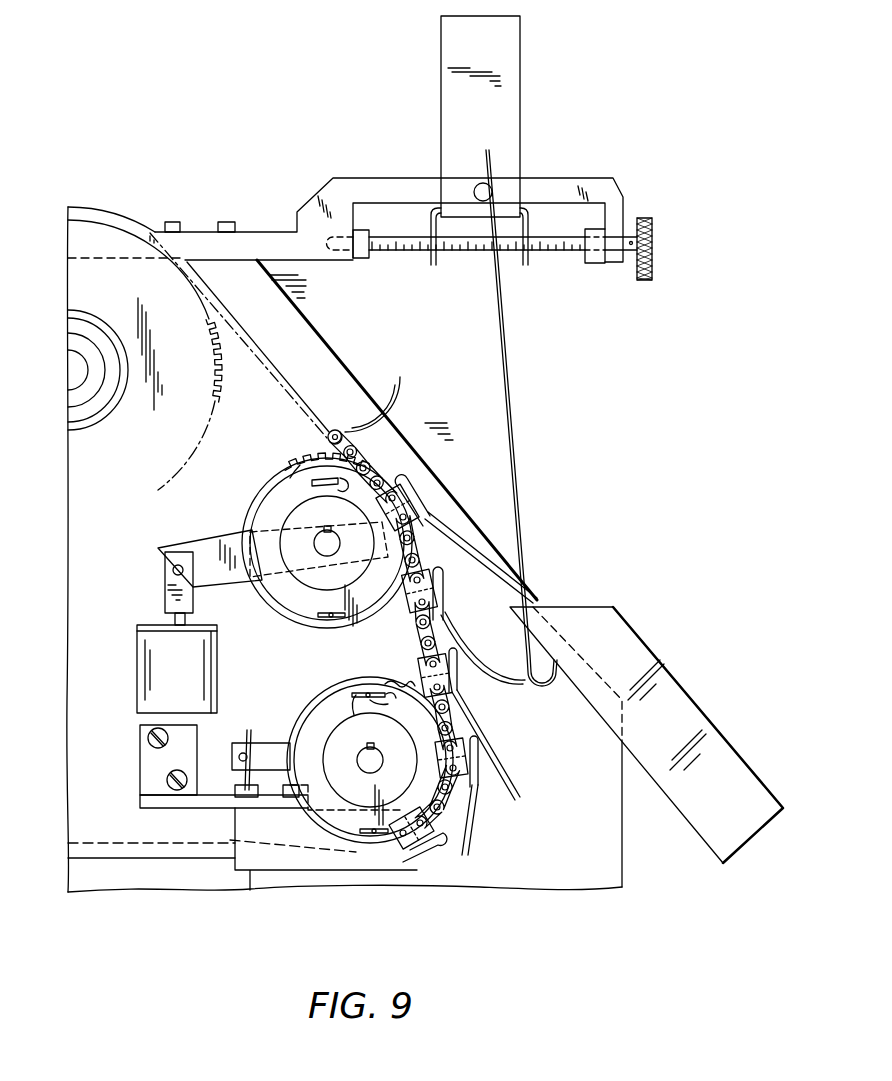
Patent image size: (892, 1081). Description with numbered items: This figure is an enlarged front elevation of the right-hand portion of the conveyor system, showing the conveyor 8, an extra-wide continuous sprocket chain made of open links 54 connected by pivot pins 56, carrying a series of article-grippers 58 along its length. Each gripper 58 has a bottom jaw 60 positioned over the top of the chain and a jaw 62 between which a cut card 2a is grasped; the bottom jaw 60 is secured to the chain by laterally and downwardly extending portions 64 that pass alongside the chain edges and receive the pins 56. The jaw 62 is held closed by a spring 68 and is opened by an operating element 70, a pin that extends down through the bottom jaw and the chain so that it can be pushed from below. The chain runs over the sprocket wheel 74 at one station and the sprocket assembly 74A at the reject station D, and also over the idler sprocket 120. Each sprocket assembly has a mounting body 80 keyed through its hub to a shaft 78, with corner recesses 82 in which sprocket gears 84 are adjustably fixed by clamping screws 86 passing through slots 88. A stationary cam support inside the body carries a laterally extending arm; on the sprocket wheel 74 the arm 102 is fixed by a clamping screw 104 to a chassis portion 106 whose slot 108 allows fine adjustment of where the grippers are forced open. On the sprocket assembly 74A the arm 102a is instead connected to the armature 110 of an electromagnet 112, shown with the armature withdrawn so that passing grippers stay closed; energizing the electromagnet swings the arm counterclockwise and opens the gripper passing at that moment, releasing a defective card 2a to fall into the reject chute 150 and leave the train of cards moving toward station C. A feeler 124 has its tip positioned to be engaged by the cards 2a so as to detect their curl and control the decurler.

The conveyor 8 is at (324, 394).
The cut cards 2a is at (479, 521).
The links 54 is at (378, 407).
The pivot pins 56 is at (362, 400).
The article-grippers 58 is at (430, 497).
The bottom jaw 60 is at (436, 507).
The jaw 62 is at (446, 512).
The laterally and downwardly extending portions 64 is at (415, 597).
The spring 68 is at (403, 477).
The operating element 70 is at (410, 592).
The sprocket wheel 74 is at (308, 691).
The sprocket assembly 74A is at (270, 464).
The shaft 78 is at (341, 545).
The mounting body 80 is at (338, 522).
The corner recesses 82 is at (297, 478).
The sprocket gears 84 is at (320, 463).
The clamping screws 86 is at (330, 485).
The slots 88 is at (346, 487).
The laterally extending arm 102 is at (243, 757).
The arm 102a is at (218, 548).
The clamping screw 104 is at (237, 768).
The chassis portion 106 is at (263, 686).
The slot 108 is at (247, 730).
The armature 110 is at (184, 618).
The electromagnet 112 is at (200, 657).
The idler sprocket 120 is at (173, 440).
The feeler 124 is at (528, 538).
The reject chute 150 is at (713, 822).
The reject station D is at (425, 464).
The insertion station C is at (503, 805).